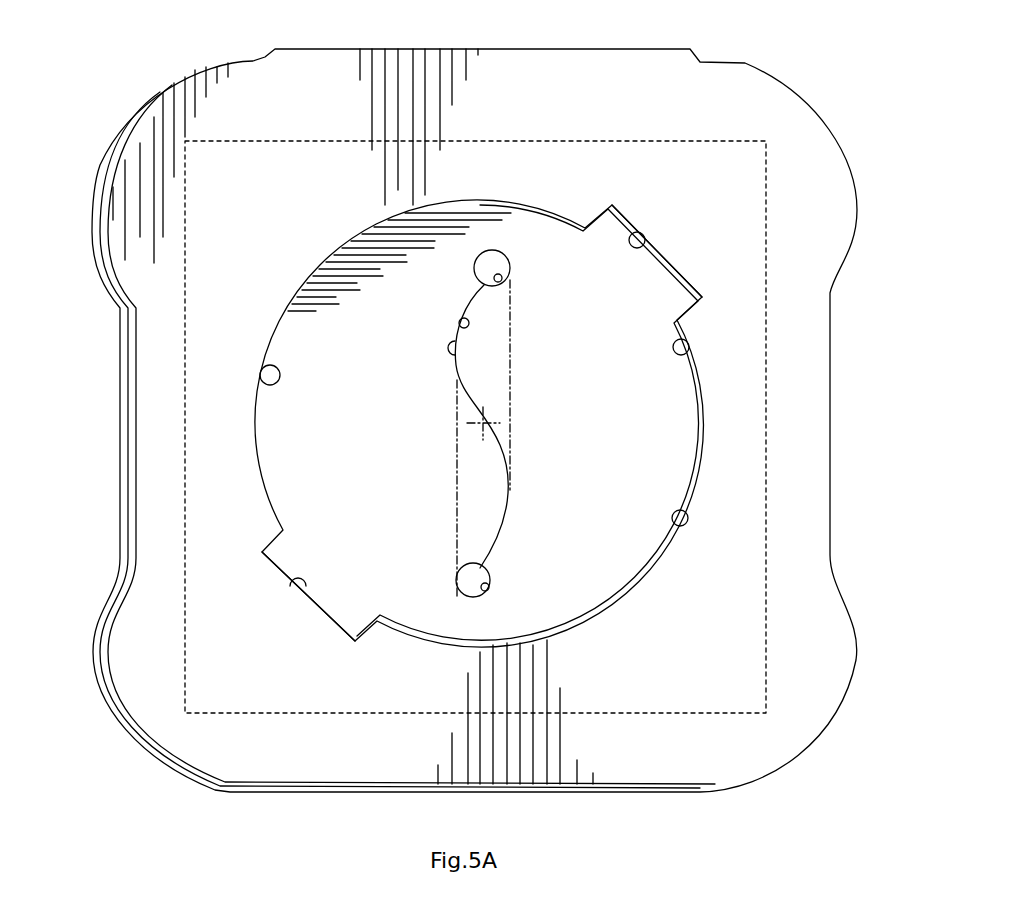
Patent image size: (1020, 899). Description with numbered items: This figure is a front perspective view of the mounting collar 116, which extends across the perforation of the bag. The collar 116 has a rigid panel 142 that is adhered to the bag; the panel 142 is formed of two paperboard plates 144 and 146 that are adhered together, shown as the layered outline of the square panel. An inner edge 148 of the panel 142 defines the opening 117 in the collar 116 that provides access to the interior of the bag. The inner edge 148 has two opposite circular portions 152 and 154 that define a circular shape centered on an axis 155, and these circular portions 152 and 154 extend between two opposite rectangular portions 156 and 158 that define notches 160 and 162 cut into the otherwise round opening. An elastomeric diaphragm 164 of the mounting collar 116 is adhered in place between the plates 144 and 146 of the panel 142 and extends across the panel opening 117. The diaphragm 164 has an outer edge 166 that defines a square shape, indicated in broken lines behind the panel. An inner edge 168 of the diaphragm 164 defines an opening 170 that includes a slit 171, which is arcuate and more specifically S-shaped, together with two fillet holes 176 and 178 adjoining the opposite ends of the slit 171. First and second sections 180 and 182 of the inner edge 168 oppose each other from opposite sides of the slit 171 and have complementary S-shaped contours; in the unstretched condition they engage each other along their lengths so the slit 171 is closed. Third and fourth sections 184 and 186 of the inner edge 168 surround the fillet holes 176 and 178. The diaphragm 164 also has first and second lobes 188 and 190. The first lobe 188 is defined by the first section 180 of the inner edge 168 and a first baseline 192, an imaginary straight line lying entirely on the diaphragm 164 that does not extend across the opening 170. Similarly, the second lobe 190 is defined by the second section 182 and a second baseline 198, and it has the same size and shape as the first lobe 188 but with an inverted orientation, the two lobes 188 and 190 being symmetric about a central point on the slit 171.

The mounting collar 116 is at (782, 58).
The opening 117 is at (668, 434).
The rigid panel 142 is at (92, 617).
The paperboard plate 144 is at (97, 671).
The paperboard plate 146 is at (122, 709).
The inner edge 148 is at (687, 342).
The circular portion 152 is at (262, 366).
The circular portion 154 is at (687, 522).
The axis 155 is at (470, 423).
The rectangular portion 156 is at (637, 232).
The rectangular portion 158 is at (288, 586).
The notch 160 is at (664, 252).
The notch 162 is at (310, 608).
The elastomeric diaphragm 164 is at (650, 535).
The outer edge 166 is at (560, 141).
The inner edge 168 is at (524, 493).
The opening 170 is at (524, 513).
The slit 171 is at (523, 539).
The fillet hole 176 is at (464, 265).
The fillet hole 178 is at (458, 596).
The first section 180 is at (458, 338).
The second section 182 is at (458, 322).
The third section 184 is at (503, 281).
The fourth section 186 is at (489, 588).
The first lobe 188 is at (488, 365).
The second lobe 190 is at (470, 503).
The first baseline 192 is at (512, 391).
The second baseline 198 is at (456, 462).